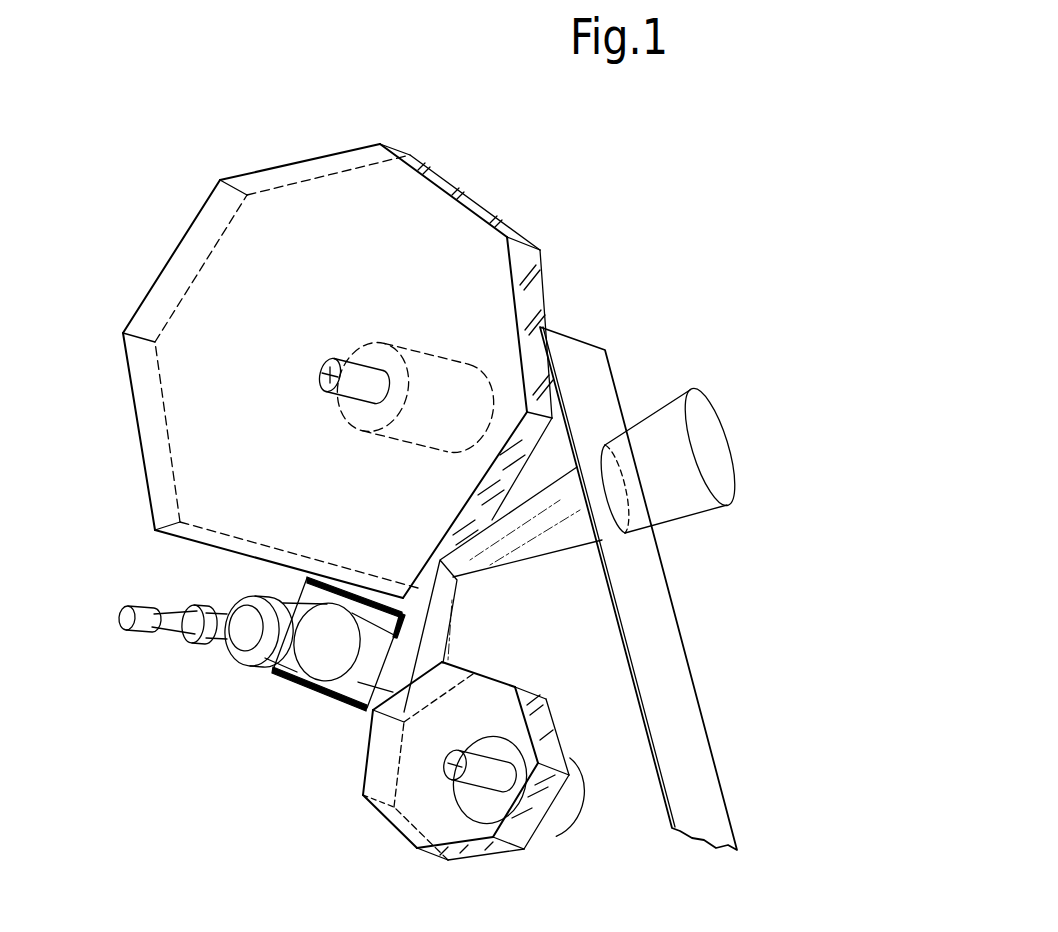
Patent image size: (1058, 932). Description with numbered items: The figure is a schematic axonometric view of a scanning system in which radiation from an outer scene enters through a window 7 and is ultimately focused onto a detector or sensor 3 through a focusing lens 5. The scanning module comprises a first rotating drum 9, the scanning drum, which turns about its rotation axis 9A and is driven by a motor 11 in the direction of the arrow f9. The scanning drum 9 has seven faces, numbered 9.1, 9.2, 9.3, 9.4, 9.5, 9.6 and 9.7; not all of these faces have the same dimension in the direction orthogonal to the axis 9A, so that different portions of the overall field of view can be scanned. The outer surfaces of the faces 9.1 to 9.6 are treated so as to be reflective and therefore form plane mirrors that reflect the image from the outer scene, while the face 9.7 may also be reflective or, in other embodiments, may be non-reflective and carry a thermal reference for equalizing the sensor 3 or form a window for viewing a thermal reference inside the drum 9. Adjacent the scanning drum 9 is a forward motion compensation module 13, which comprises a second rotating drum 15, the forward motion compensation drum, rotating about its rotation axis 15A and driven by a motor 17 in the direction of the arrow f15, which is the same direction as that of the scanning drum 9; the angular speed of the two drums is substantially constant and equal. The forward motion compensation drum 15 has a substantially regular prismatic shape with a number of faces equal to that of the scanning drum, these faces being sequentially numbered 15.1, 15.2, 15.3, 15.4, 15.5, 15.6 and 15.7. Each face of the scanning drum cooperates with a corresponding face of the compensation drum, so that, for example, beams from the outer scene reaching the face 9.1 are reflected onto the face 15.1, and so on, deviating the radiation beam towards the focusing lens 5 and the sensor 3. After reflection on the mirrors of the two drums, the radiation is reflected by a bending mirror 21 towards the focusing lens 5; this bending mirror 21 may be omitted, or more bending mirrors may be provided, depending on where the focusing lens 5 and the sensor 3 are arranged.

The detector or sensor 3 is at (140, 630).
The focusing lens 5 is at (245, 655).
The window 7 is at (683, 667).
The first rotating drum 9 is at (335, 357).
The face of the rotating drum 9.1 is at (492, 498).
The face of the rotating drum 9.2 is at (543, 290).
The face of the rotating drum 9.3 is at (480, 207).
The face of the rotating drum 9.4 is at (333, 167).
The face of the rotating drum 9.5 is at (200, 235).
The face of the rotating drum 9.6 is at (155, 465).
The face of the rotating drum 9.7 is at (207, 550).
The rotation axis 9A is at (325, 377).
The motor 11 is at (433, 367).
The forward motion compensation module 13 is at (270, 782).
The second rotating drum 15 is at (472, 766).
The face of the rotating drum 15.1 is at (463, 672).
The face of the rotating drum 15.2 is at (507, 678).
The face of the rotating drum 15.3 is at (550, 718).
The face of the rotating drum 15.4 is at (532, 802).
The face of the rotating drum 15.5 is at (487, 853).
The face of the rotating drum 15.6 is at (407, 830).
The face of the rotating drum 15.7 is at (383, 757).
The rotation axis 15A is at (453, 763).
The motor 17 is at (567, 800).
The bending mirror 21 is at (343, 692).
The arrow f9 is at (437, 268).
The arrow f15 is at (512, 728).